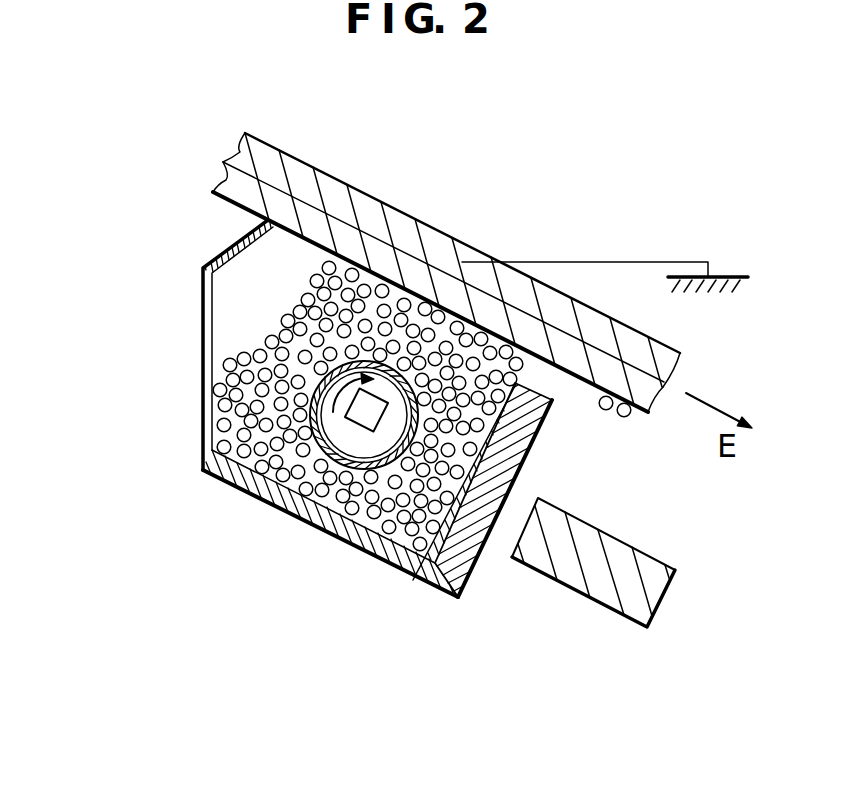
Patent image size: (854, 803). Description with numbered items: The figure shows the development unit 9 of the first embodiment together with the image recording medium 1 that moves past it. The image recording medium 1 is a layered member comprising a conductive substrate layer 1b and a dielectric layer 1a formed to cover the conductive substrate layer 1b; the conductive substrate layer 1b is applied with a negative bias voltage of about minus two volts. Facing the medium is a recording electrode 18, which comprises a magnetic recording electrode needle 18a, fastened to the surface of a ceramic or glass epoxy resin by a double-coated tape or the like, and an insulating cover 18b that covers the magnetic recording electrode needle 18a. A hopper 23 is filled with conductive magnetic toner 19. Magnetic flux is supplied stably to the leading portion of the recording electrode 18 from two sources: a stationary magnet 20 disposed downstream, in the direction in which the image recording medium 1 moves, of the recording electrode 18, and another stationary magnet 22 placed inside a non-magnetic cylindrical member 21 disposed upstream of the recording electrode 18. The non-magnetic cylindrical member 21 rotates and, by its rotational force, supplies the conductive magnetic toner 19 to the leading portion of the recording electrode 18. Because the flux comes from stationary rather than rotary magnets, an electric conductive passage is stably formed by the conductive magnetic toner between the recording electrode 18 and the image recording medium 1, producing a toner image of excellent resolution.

The image recording medium 1 is at (415, 260).
The dielectric layer 1a is at (245, 188).
The conductive substrate layer 1b is at (263, 158).
The development unit 9 is at (314, 431).
The recording electrode 18 is at (349, 431).
The magnetic recording electrode needle 18a is at (441, 566).
The insulating cover 18b is at (417, 577).
The conductive magnetic toner 19 is at (318, 522).
The stationary magnet 20 is at (603, 553).
The non-magnetic cylindrical member 21 is at (382, 455).
The stationary magnet 22 is at (385, 425).
The hopper 23 is at (202, 312).